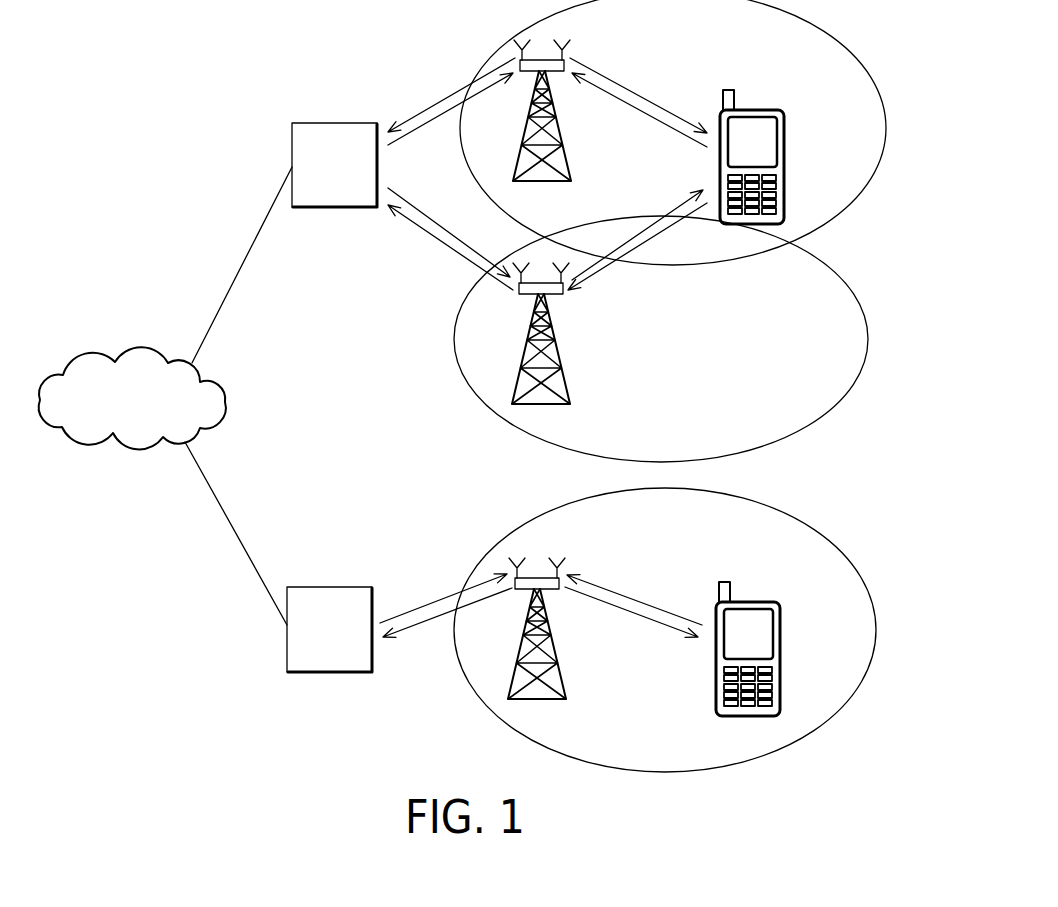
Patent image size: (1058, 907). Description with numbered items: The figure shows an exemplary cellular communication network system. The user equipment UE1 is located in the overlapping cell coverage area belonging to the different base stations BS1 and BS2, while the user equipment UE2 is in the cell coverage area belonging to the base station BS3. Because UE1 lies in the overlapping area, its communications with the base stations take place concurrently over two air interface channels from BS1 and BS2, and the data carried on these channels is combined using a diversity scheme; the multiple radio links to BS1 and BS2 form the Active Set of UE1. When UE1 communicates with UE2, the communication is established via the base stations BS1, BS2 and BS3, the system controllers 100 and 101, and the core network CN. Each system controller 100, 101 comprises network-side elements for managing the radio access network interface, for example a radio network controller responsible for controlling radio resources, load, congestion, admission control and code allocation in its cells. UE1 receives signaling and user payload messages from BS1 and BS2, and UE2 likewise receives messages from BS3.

The system controller 100 is at (322, 123).
The system controller 101 is at (318, 587).
The core network CN is at (132, 398).
The base station BS1 is at (568, 162).
The base station BS2 is at (567, 387).
The base station BS3 is at (565, 683).
The user equipment UE1 is at (752, 110).
The user equipment UE2 is at (748, 602).